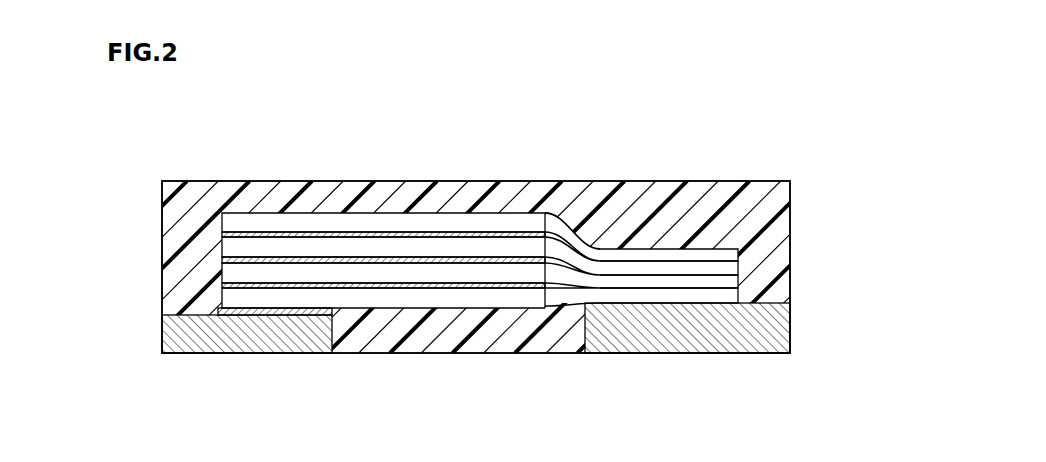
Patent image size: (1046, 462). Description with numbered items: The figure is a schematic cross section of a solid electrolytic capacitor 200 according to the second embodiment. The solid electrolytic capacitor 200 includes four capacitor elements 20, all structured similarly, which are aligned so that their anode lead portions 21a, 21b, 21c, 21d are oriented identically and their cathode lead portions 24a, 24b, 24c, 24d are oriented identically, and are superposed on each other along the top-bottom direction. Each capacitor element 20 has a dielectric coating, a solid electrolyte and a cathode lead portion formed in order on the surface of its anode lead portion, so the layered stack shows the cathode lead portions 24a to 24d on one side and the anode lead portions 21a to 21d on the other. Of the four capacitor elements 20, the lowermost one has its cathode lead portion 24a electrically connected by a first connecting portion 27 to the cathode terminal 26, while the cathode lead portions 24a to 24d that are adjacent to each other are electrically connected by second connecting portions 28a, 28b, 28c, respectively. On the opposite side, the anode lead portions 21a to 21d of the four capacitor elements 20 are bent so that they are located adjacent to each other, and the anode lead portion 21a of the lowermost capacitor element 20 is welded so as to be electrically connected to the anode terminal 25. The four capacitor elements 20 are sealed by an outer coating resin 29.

The solid electrolytic capacitor 200 is at (743, 77).
The outer coating resin 29 is at (738, 183).
The capacitor element 20 is at (550, 217).
The cathode terminal 26 is at (178, 335).
The anode terminal 25 is at (778, 327).
The first connecting portion 27 is at (335, 310).
The cathode lead portion 24a is at (233, 298).
The cathode lead portion 24b is at (233, 273).
The cathode lead portion 24c is at (233, 246).
The cathode lead portion 24d is at (233, 221).
The second connecting portion 28a is at (392, 286).
The second connecting portion 28b is at (440, 266).
The second connecting portion 28c is at (488, 236).
The anode lead portion 21a is at (738, 297).
The anode lead portion 21b is at (738, 282).
The anode lead portion 21c is at (738, 268).
The anode lead portion 21d is at (738, 253).